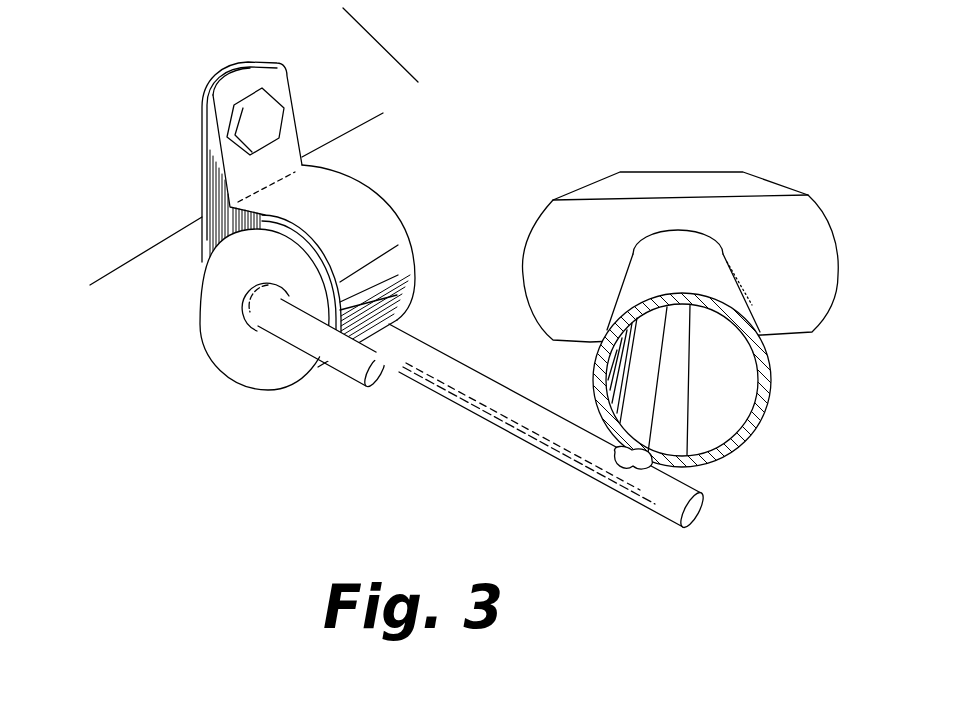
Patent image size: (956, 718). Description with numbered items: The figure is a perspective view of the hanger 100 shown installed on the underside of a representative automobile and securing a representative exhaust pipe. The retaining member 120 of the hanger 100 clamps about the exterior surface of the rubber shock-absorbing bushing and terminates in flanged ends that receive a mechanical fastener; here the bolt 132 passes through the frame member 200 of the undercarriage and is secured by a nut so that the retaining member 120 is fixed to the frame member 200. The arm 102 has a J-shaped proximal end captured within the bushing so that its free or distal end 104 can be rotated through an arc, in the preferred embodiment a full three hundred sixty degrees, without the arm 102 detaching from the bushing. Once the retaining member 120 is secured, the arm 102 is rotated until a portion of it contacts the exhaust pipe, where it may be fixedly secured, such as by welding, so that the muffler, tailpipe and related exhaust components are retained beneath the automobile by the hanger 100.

The frame member 200 is at (162, 104).
The bolt 132 is at (277, 115).
The retaining member 120 is at (200, 262).
The hanger 100 is at (249, 415).
The arm 102 is at (540, 437).
The distal end 104 is at (612, 503).